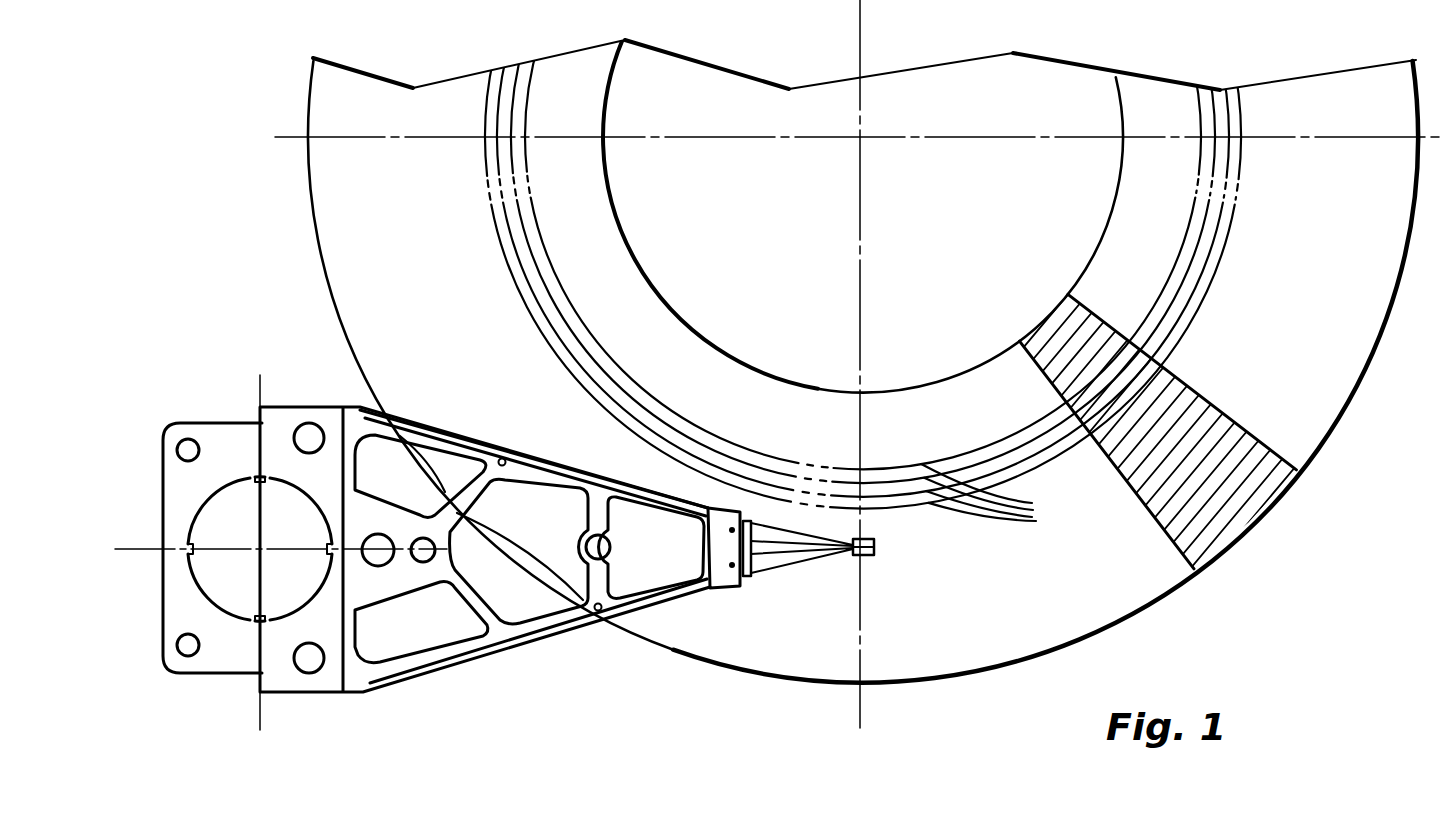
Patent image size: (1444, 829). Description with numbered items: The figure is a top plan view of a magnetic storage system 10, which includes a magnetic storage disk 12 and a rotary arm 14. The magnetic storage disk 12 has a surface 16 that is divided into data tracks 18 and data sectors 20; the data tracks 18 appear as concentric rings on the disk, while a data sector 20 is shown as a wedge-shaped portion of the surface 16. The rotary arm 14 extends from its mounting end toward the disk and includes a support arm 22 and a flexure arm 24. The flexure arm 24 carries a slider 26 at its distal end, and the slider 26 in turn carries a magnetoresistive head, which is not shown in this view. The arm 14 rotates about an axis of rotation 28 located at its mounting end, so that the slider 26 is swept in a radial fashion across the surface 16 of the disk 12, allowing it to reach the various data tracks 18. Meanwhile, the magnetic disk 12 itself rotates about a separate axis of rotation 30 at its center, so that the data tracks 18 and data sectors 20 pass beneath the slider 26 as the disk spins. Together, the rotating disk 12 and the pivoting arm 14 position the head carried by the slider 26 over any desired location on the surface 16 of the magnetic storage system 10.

The magnetic storage system 10 is at (194, 189).
The magnetic storage disk 12 is at (320, 262).
The rotary arm 14 is at (541, 648).
The surface 16 is at (1312, 376).
The data tracks 18 is at (863, 268).
The data sectors 20 is at (1272, 503).
The support arm 22 is at (465, 425).
The flexure arm 24 is at (787, 563).
The slider 26 is at (864, 555).
The axis of rotation 28 is at (259, 548).
The axis of rotation 30 is at (863, 138).